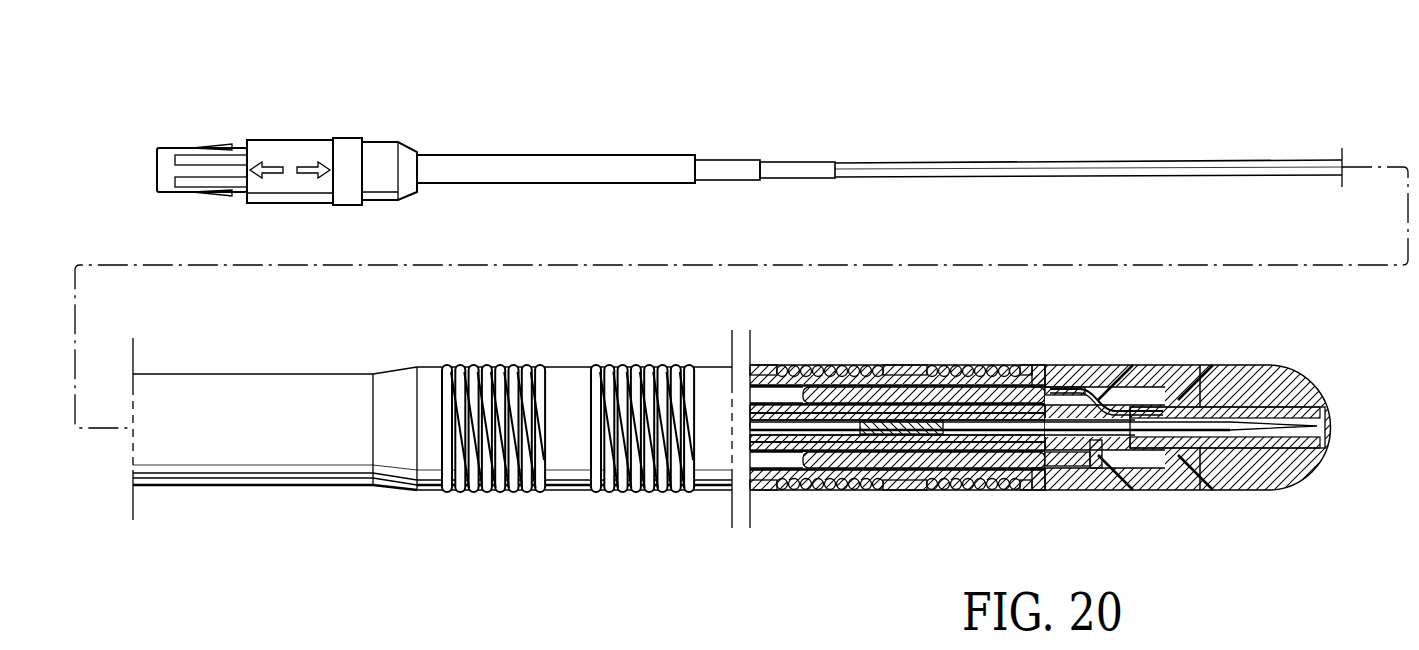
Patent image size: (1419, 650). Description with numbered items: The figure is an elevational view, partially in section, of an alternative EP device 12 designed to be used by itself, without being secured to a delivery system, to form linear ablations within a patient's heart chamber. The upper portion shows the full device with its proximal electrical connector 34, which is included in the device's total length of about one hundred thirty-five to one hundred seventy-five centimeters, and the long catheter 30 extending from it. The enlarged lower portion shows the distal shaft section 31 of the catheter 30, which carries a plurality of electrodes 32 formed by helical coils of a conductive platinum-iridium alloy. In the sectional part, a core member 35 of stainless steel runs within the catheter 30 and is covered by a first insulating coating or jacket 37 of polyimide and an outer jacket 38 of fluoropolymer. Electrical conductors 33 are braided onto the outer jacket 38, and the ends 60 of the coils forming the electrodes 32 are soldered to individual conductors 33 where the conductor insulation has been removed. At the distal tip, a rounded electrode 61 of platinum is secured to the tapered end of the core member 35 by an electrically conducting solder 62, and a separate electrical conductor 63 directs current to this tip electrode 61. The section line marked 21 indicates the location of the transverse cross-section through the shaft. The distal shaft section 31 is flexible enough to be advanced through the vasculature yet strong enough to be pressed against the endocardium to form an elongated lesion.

The EP device 12 is at (1232, 137).
The section line of FIG. 21 is at (821, 353).
The catheter 30 is at (1077, 168).
The distal shaft section 31 is at (572, 378).
The electrodes 32 is at (478, 490).
The electrical conductors 33 is at (897, 390).
The electrical connector 34 is at (272, 140).
The core member 35 is at (1025, 425).
The first insulating coating or jacket 37 is at (1043, 443).
The outer jacket 38 is at (1088, 443).
The ends of the metallic coils 60 is at (1022, 368).
The rounded electrode 61 is at (1283, 473).
The electrically conducting solder 62 is at (1277, 410).
The electrical conductor 63 is at (1123, 393).